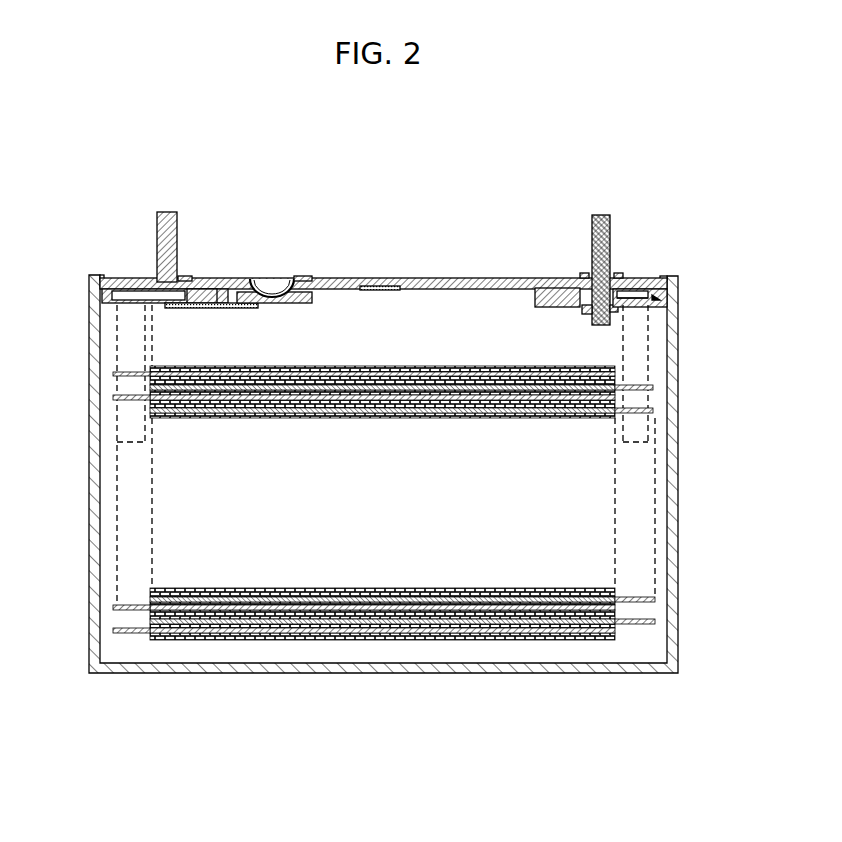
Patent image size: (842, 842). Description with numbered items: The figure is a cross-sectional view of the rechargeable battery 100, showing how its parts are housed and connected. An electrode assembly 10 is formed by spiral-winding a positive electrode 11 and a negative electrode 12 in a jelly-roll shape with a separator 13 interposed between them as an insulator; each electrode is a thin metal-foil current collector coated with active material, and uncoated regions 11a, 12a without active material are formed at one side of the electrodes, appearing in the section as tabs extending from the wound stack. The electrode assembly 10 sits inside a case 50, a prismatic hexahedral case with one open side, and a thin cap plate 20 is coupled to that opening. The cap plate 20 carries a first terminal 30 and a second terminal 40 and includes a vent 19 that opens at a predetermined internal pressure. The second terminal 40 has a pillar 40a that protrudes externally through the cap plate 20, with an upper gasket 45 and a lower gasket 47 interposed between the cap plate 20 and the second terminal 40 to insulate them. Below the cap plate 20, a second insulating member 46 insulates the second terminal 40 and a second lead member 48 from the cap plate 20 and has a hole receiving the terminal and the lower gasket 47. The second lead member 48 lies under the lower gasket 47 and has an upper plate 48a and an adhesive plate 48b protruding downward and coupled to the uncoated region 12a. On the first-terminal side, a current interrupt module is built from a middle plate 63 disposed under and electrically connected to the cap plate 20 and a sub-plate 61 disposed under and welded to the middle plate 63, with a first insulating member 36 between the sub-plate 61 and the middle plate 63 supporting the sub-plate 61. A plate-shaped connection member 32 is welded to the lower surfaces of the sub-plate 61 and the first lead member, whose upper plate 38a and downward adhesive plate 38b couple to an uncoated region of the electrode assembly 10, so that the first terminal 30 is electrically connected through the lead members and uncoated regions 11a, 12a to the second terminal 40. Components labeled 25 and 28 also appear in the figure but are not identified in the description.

The rechargeable battery 100 is at (398, 158).
The electrode assembly 10 is at (383, 548).
The positive electrode 11 is at (222, 632).
The uncoated region 11a is at (135, 633).
The negative electrode 12 is at (270, 624).
The uncoated region 12a is at (633, 624).
The separator 13 is at (385, 615).
The vent 19 is at (385, 287).
The cap plate 20 is at (462, 285).
The gasket 25 is at (184, 278).
The cap assembly 28 is at (382, 402).
The first terminal 30 is at (157, 224).
The connection member 32 is at (232, 308).
The first insulating member 36 is at (213, 290).
The upper plate 38a is at (152, 304).
The adhesive plate 38b is at (117, 338).
The second terminal 40 is at (611, 222).
The pillar 40a is at (587, 316).
The upper gasket 45 is at (621, 276).
The second insulating member 46 is at (535, 297).
The lower gasket 47 is at (584, 276).
The second lead member 48 is at (662, 297).
The upper plate 48a is at (633, 305).
The adhesive plate 48b is at (650, 355).
The case 50 is at (672, 443).
The sub-plate 61 is at (292, 306).
The middle plate 63 is at (270, 285).